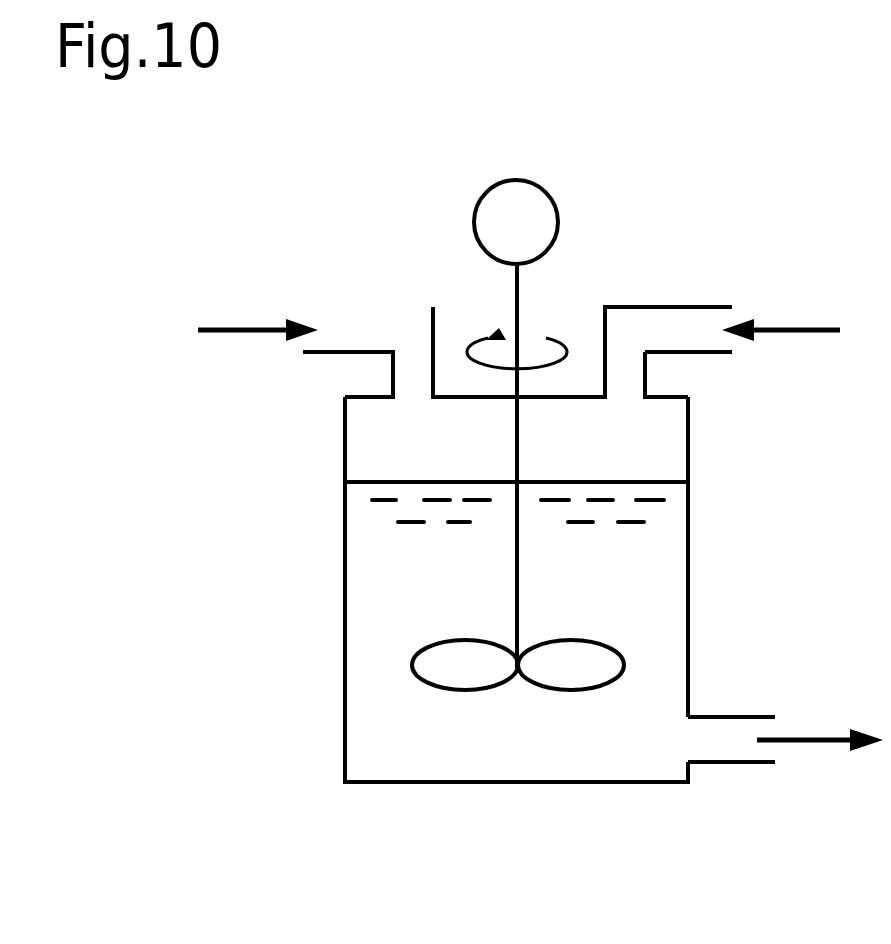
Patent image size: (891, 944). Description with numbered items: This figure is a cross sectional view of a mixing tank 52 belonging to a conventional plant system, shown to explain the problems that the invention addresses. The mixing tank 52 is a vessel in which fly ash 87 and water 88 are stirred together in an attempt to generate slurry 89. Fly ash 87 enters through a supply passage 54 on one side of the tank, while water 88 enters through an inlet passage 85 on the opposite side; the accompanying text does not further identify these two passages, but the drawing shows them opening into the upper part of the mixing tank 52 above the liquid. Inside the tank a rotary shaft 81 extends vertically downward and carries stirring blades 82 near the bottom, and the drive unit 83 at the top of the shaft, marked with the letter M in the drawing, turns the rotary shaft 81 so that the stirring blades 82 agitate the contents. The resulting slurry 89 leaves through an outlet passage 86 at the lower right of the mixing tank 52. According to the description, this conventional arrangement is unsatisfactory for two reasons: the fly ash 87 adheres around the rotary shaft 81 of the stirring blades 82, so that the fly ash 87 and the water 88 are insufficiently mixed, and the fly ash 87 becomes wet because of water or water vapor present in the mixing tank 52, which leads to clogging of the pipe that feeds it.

The mixing tank 52 is at (345, 740).
The supply pipe 54 is at (332, 307).
The rotary shaft 81 is at (520, 612).
The stirring blades 82 is at (412, 660).
The motor 83 is at (555, 195).
The inlet pipe 85 is at (703, 307).
The outlet pipe 86 is at (747, 717).
The fly ash 87 is at (247, 333).
The water 88 is at (790, 332).
The slurry 89 is at (815, 742).